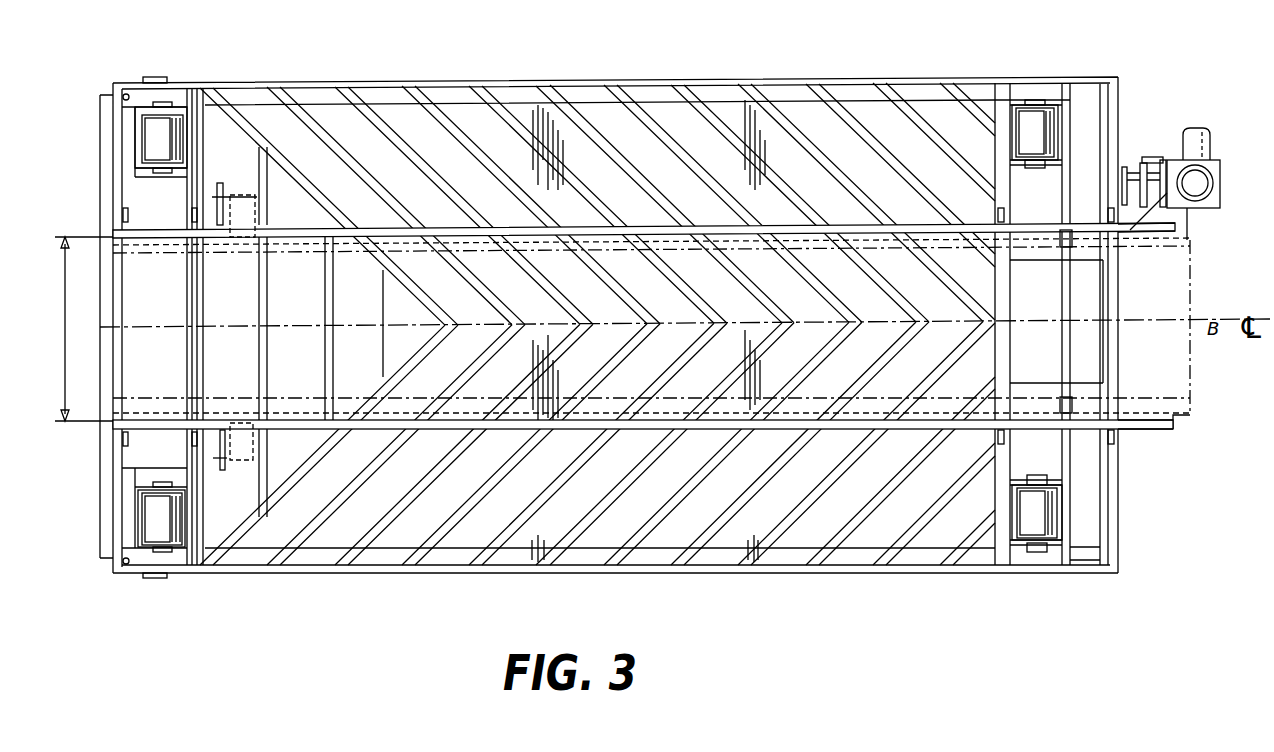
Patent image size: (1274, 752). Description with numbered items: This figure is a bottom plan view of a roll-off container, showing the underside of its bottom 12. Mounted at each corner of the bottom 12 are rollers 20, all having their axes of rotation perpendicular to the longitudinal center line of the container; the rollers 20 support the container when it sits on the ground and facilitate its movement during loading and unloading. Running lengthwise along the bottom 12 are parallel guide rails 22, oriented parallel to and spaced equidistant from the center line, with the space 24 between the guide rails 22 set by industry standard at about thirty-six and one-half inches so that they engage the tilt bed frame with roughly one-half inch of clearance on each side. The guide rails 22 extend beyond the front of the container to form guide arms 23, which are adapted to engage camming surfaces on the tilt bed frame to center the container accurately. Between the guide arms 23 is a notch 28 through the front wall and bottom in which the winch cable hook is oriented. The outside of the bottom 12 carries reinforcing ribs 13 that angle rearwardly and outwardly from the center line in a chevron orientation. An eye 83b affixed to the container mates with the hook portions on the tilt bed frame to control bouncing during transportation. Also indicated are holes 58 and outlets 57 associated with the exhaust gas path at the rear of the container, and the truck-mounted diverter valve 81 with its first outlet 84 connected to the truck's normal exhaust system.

The bottom 12 is at (800, 102).
The reinforcing ribs 13 is at (720, 527).
The rollers 20 is at (1035, 522).
The guide rails 22 is at (320, 424).
The guide arms 23 is at (1142, 430).
The space 24 is at (80, 329).
The notch 28 is at (1056, 321).
The outlets 57 is at (150, 580).
The holes 58 is at (126, 94).
The diverter valve 81 is at (1207, 208).
The eye 83b is at (232, 465).
The first outlet 84 is at (1210, 142).